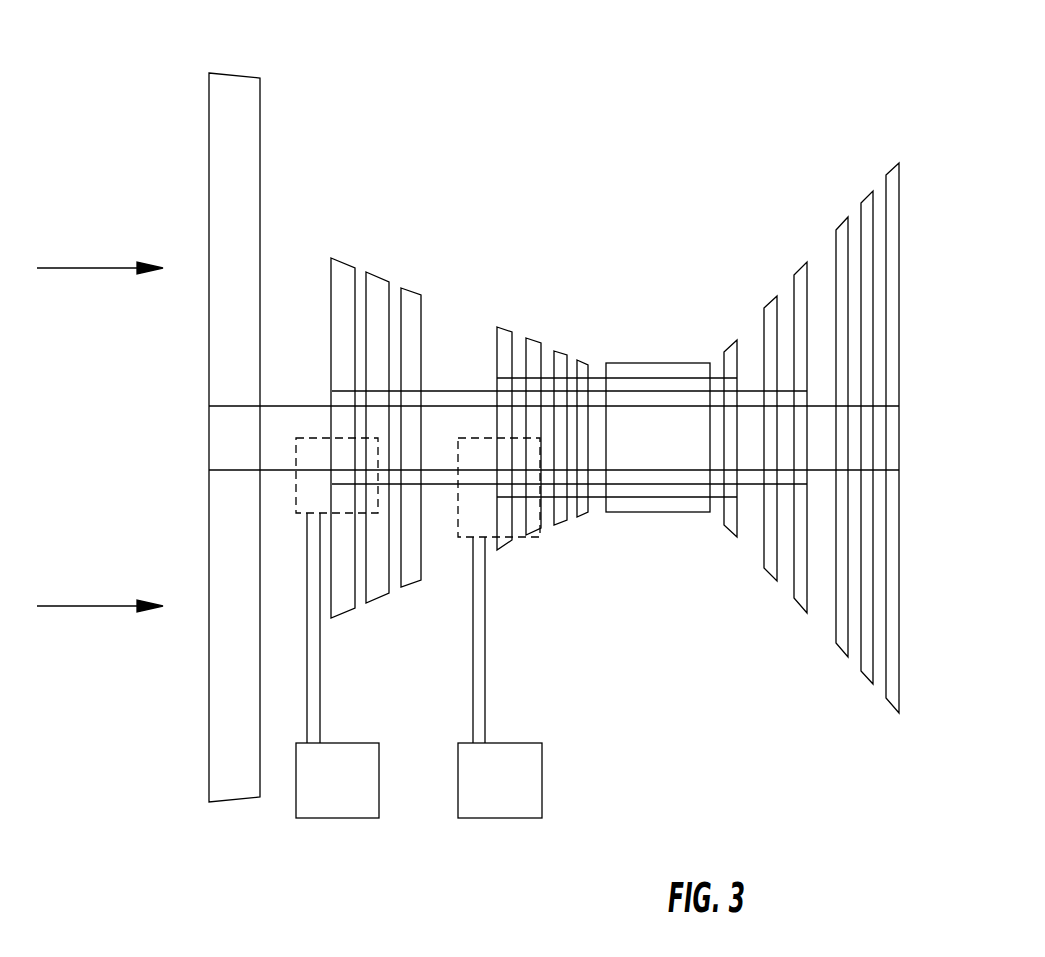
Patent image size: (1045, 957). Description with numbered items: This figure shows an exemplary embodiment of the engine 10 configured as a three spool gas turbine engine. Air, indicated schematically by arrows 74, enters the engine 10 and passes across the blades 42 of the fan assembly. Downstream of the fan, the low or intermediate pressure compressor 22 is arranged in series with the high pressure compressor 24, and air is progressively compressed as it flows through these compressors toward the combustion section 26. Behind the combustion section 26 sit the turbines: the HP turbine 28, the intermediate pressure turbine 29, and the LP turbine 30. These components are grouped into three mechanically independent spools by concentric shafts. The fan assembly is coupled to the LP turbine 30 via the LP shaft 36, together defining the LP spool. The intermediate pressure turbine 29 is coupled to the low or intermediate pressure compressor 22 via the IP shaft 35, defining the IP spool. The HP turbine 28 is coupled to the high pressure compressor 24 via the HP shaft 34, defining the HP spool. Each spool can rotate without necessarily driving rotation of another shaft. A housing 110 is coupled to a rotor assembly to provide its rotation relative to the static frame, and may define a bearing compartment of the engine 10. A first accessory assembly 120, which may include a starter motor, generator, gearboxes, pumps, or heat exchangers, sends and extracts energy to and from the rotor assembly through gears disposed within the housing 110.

The engine 10 is at (660, 93).
The low or intermediate pressure compressor 22 is at (393, 258).
The high pressure compressor 24 is at (535, 312).
The combustion section 26 is at (645, 363).
The HP turbine 28 is at (728, 337).
The intermediate pressure turbine 29 is at (801, 258).
The LP turbine 30 is at (849, 398).
The HP shaft 34 is at (720, 378).
The IP shaft 35 is at (430, 485).
The LP shaft 36 is at (230, 405).
The blades 42 is at (235, 60).
The arrows 74 is at (97, 268).
The housing 110 is at (295, 492).
The first accessory assembly 120 is at (333, 820).